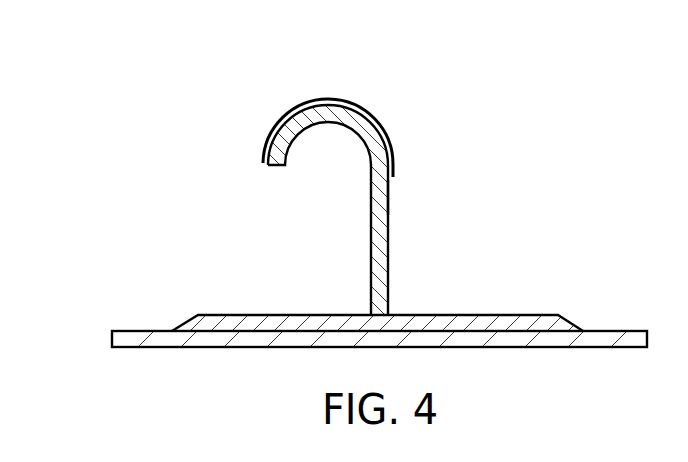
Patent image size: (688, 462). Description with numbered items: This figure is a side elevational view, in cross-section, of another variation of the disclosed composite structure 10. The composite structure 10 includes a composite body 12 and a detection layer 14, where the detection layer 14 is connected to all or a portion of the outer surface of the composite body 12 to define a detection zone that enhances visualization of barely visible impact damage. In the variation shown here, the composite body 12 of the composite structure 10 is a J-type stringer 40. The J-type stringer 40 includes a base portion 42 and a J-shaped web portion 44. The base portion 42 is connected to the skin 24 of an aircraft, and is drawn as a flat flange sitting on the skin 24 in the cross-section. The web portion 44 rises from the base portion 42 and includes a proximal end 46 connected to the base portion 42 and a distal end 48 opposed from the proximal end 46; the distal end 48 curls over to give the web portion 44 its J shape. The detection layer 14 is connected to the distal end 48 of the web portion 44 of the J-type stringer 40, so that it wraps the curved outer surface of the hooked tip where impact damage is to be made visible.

The composite structure 10 is at (570, 160).
The composite body 12 is at (388, 251).
The detection layer 14 is at (326, 98).
The skin 24 is at (607, 331).
The J-type stringer 40 is at (242, 207).
The base portion 42 is at (233, 315).
The J-shaped web portion 44 is at (388, 206).
The proximal end 46 is at (395, 308).
The distal end 48 is at (390, 130).